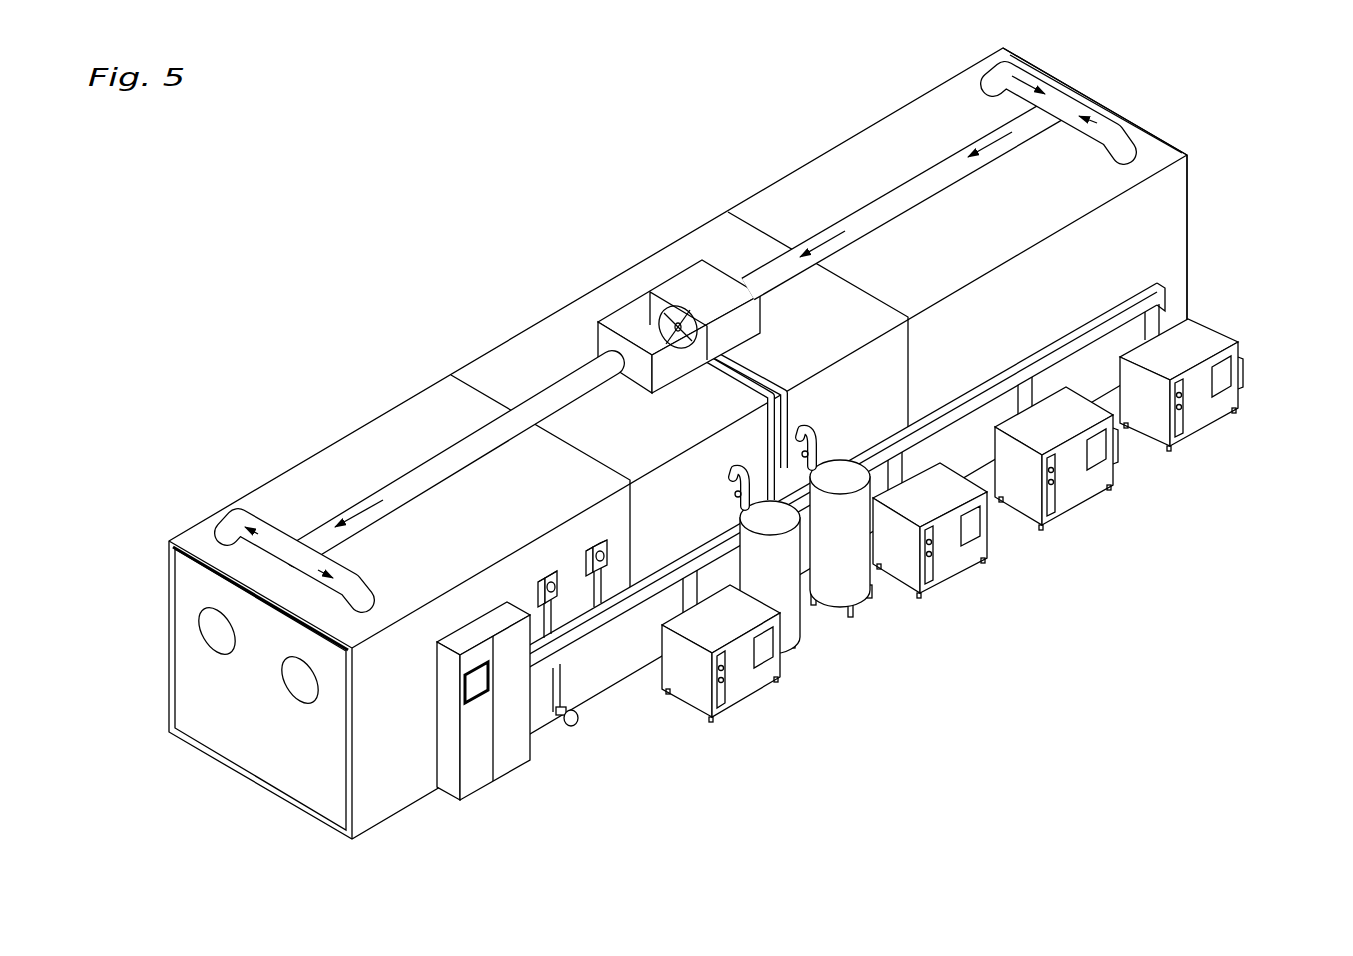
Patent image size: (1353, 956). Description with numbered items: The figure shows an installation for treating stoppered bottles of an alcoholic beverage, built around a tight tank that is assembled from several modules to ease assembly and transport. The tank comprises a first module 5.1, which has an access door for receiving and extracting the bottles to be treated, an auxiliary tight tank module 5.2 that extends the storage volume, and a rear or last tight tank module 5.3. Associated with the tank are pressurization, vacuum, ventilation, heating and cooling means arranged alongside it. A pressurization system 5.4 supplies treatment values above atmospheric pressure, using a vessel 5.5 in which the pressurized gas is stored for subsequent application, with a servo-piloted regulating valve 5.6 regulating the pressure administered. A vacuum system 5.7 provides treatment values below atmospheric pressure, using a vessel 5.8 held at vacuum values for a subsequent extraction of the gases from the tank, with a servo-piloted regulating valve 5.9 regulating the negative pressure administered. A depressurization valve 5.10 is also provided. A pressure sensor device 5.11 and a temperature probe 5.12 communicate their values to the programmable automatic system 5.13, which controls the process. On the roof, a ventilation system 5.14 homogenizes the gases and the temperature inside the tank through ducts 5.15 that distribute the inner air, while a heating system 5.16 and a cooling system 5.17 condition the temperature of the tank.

The first module 5.1 is at (323, 443).
The auxiliary tight tank module 5.2 is at (545, 318).
The rear tight tank module 5.3 is at (785, 165).
The pressurization system 5.4 is at (752, 700).
The pressurized gas vessel 5.5 is at (803, 628).
The servo-piloted regulating valve 5.6 is at (725, 482).
The vacuum system 5.7 is at (962, 580).
The vacuum vessel 5.8 is at (870, 592).
The servo-piloted regulating valve 5.9 is at (800, 445).
The depressurization valve 5.10 is at (572, 738).
The pressure sensor device 5.11 is at (555, 603).
The temperature probe 5.12 is at (605, 568).
The programmable automatic system 5.13 is at (487, 790).
The ventilation system 5.14 is at (690, 262).
The ducts 5.15 is at (450, 437).
The heating system 5.16 is at (1087, 505).
The cooling system 5.17 is at (1208, 435).